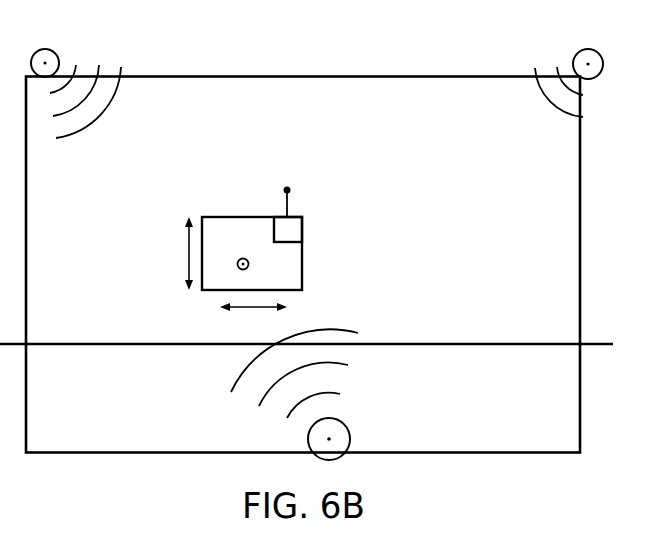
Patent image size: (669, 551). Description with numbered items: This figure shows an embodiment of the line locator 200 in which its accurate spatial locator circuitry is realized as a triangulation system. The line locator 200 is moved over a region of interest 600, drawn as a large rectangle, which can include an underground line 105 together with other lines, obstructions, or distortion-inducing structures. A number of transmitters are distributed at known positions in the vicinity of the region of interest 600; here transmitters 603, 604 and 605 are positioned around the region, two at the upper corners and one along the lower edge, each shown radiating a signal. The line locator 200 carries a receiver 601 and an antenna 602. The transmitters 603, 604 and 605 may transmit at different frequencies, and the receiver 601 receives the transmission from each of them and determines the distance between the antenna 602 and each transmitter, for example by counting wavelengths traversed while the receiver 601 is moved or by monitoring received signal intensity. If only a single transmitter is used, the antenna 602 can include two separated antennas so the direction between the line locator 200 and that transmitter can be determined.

The region of interest 600 is at (493, 115).
The line 105 is at (494, 345).
The transmitter 605 is at (53, 50).
The transmitter 603 is at (578, 52).
The transmitter 604 is at (351, 437).
The line locator 200 is at (244, 240).
The receiver 601 is at (295, 232).
The antenna 602 is at (288, 203).